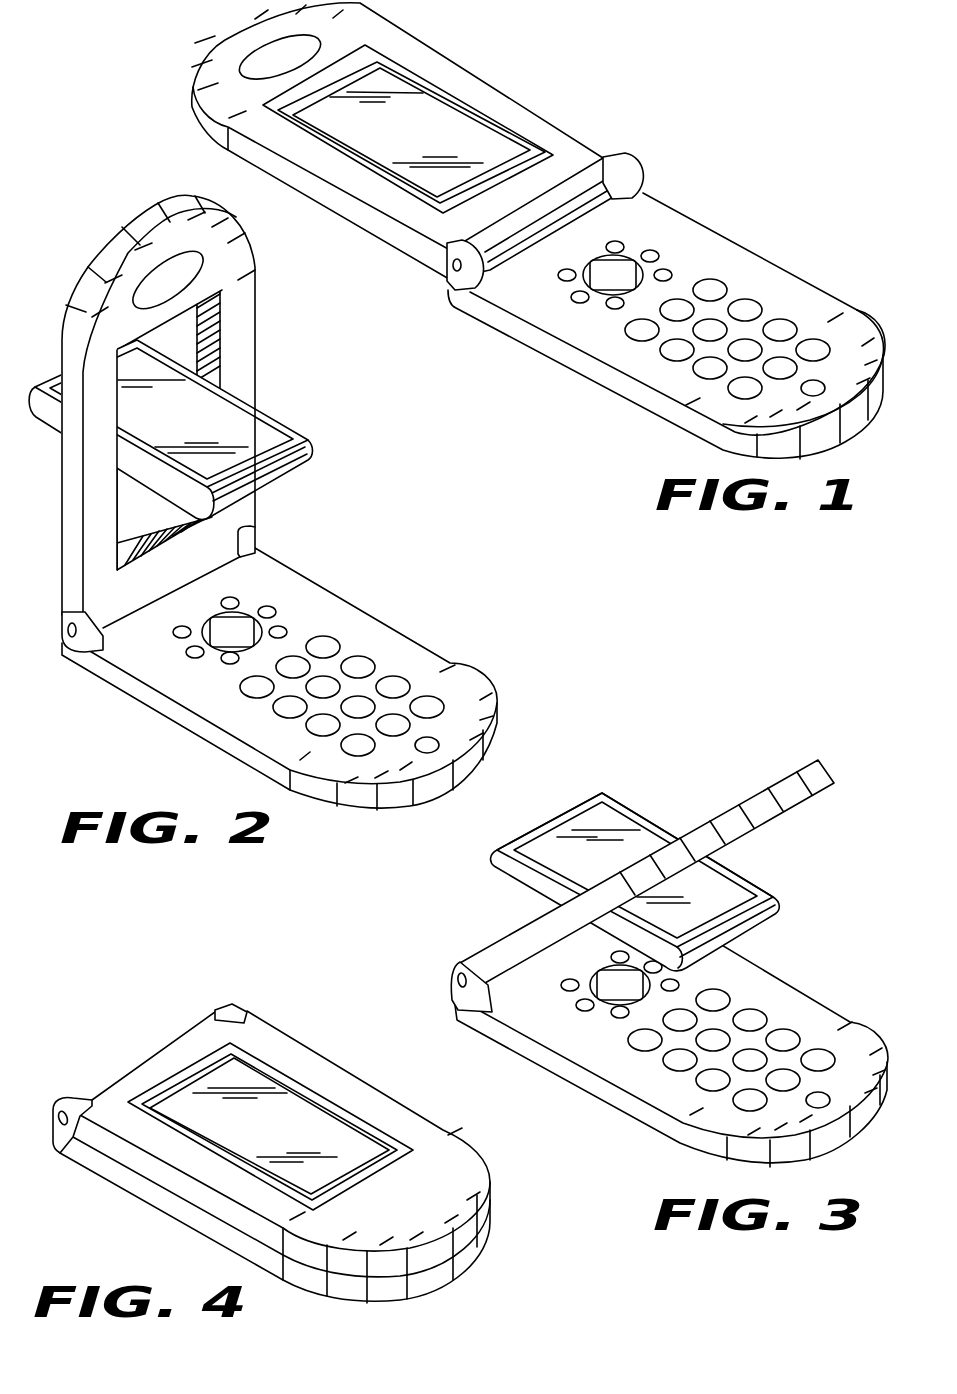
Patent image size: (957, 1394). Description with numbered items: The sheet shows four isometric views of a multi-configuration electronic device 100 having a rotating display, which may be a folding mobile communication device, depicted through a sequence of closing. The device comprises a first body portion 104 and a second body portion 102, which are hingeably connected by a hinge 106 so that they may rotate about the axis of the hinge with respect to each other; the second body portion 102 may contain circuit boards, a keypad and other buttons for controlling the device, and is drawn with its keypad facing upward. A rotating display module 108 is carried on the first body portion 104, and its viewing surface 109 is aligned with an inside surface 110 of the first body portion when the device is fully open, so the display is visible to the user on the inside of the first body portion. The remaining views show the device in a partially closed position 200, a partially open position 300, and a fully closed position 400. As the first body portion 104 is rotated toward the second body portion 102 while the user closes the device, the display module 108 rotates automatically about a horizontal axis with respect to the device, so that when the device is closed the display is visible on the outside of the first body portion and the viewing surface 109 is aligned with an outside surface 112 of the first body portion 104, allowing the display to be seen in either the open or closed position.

In FIG. 1, the multi-configuration electronic device 100 is at (538, 231).
In FIG. 2, the partially closed position 200 is at (263, 502).
In FIG. 3, the partially open position 300 is at (644, 968).
In FIG. 4, the fully closed position 400 is at (297, 1151).
In FIG. 1, the second body portion 102 is at (680, 193).
In FIG. 2, the second body portion 102 is at (343, 567).
In FIG. 3, the second body portion 102 is at (821, 990).
In FIG. 4, the second body portion 102 is at (493, 1237).
In FIG. 1, the first body portion 104 is at (435, 141).
In FIG. 2, the first body portion 104 is at (184, 405).
In FIG. 3, the first body portion 104 is at (783, 833).
In FIG. 4, the first body portion 104 is at (310, 1125).
In FIG. 1, the hinge 106 is at (510, 256).
In FIG. 2, the hinge 106 is at (127, 617).
In FIG. 3, the hinge 106 is at (452, 972).
In FIG. 4, the hinge 106 is at (72, 1126).
In FIG. 1, the rotating display module 108 is at (409, 129).
In FIG. 2, the rotating display module 108 is at (172, 429).
In FIG. 3, the rotating display module 108 is at (603, 792).
In FIG. 4, the rotating display module 108 is at (270, 1105).
In FIG. 1, the viewing surface 109 is at (419, 142).
In FIG. 2, the viewing surface 109 is at (183, 434).
In FIG. 4, the viewing surface 109 is at (281, 1134).
In FIG. 1, the inside surface 110 is at (552, 118).
In FIG. 4, the outside surface 112 is at (377, 1093).